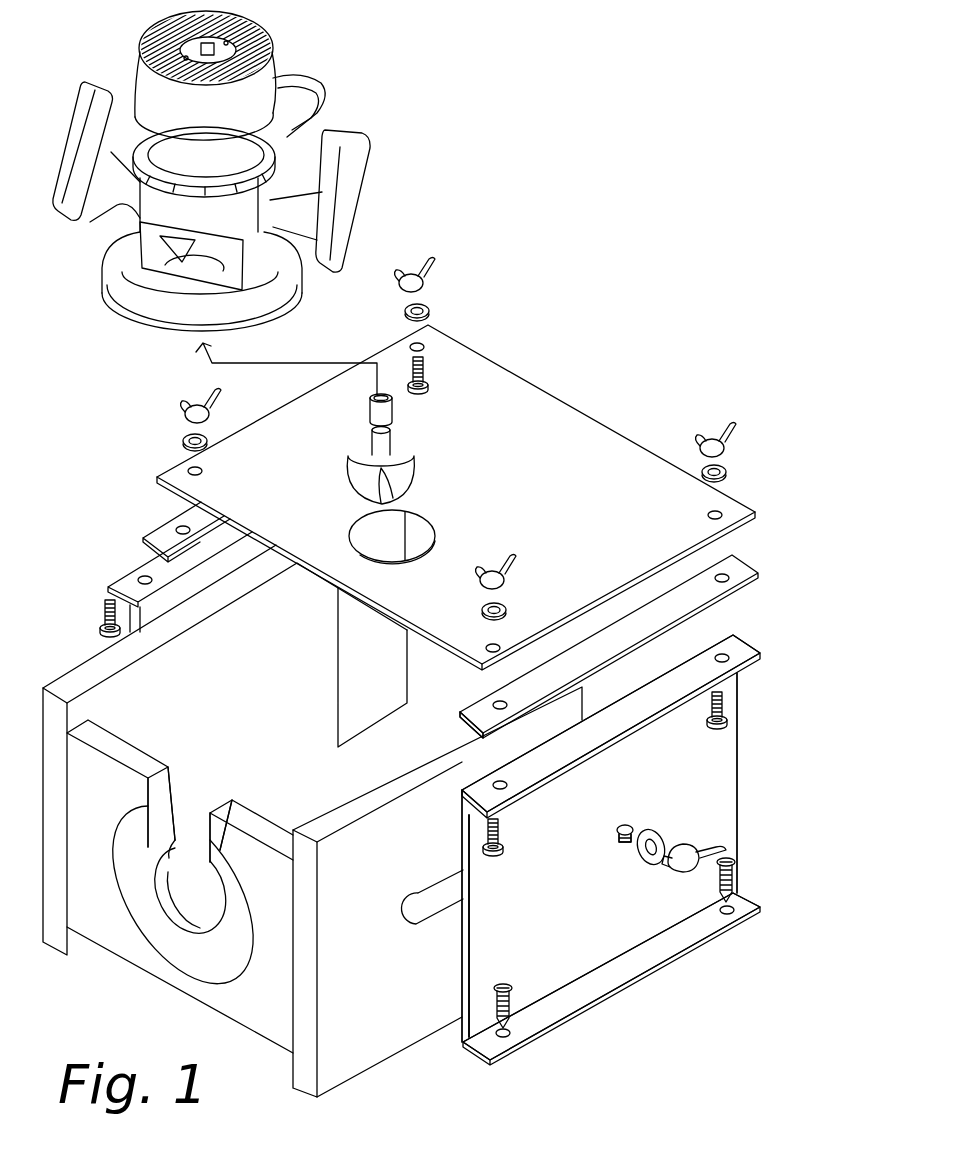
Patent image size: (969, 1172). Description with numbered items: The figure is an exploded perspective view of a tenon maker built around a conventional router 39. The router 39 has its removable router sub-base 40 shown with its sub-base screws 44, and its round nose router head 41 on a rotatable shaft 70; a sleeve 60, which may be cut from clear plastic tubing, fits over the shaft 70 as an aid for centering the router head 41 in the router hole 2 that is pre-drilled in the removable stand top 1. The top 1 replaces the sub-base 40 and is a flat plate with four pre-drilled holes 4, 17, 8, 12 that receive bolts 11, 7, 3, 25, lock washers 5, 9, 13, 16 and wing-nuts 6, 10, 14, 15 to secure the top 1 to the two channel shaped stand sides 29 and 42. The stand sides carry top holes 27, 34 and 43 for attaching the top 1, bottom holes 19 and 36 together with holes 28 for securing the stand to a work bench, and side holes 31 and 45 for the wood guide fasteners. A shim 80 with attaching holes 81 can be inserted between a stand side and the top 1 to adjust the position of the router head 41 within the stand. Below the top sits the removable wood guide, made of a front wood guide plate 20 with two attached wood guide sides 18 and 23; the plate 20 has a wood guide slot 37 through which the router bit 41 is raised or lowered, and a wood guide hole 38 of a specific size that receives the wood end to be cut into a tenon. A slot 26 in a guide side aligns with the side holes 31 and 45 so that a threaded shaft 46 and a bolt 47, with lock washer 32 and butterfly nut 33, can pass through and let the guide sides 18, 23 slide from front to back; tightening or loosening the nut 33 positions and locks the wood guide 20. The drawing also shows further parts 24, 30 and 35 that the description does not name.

The removable stand top 1 is at (535, 394).
The router hole 2 is at (425, 513).
The bolt 3 is at (102, 615).
The hole 4 is at (187, 467).
The lock washer 5 is at (182, 441).
The wing-nut 6 is at (183, 414).
The bolt 7 is at (428, 370).
The hole 8 is at (424, 345).
The lock washer 9 is at (430, 305).
The wing-nut 10 is at (417, 272).
The bolt 11 is at (734, 698).
The hole 12 is at (721, 513).
The lock washer 13 is at (728, 467).
The wing-nut 14 is at (700, 443).
The wing-nut 15 is at (505, 575).
The lock washer 16 is at (483, 606).
The hole 17 is at (498, 644).
The wood guide side 18 is at (393, 1038).
The bottom hole 19 is at (517, 1044).
The front wood guide plate 20 is at (235, 1006).
The wood guide side 23 is at (47, 945).
The bracket 24 is at (611, 850).
The bolt 25 is at (504, 849).
The slot 26 is at (417, 923).
The top hole 27 is at (505, 785).
The pre-drilled hole 28 is at (525, 1043).
The channel shaped stand side 29 is at (720, 783).
The bracket bottom flange 30 is at (598, 981).
The side hole 31 is at (630, 820).
The lock washer 32 is at (658, 836).
The butterfly nut 33 is at (672, 875).
The top hole 34 is at (743, 650).
The screw 35 is at (738, 868).
The bottom hole 36 is at (728, 915).
The wood guide slot 37 is at (174, 777).
The wood guide hole 38 is at (174, 887).
The router 39 is at (222, 222).
The router sub-base 40 is at (137, 320).
The router head 41 is at (352, 477).
The channel shaped stand side 42 is at (170, 598).
The top hole 43 is at (140, 577).
The sub-base screws 44 is at (155, 303).
The pre-drilled hole 45 is at (490, 708).
The threaded shaft 46 is at (626, 845).
The bolt 47 is at (462, 720).
The sleeve 60 is at (368, 410).
The rotatable shaft 70 is at (390, 442).
The shim 80 is at (140, 542).
The attaching holes 81 is at (178, 528).